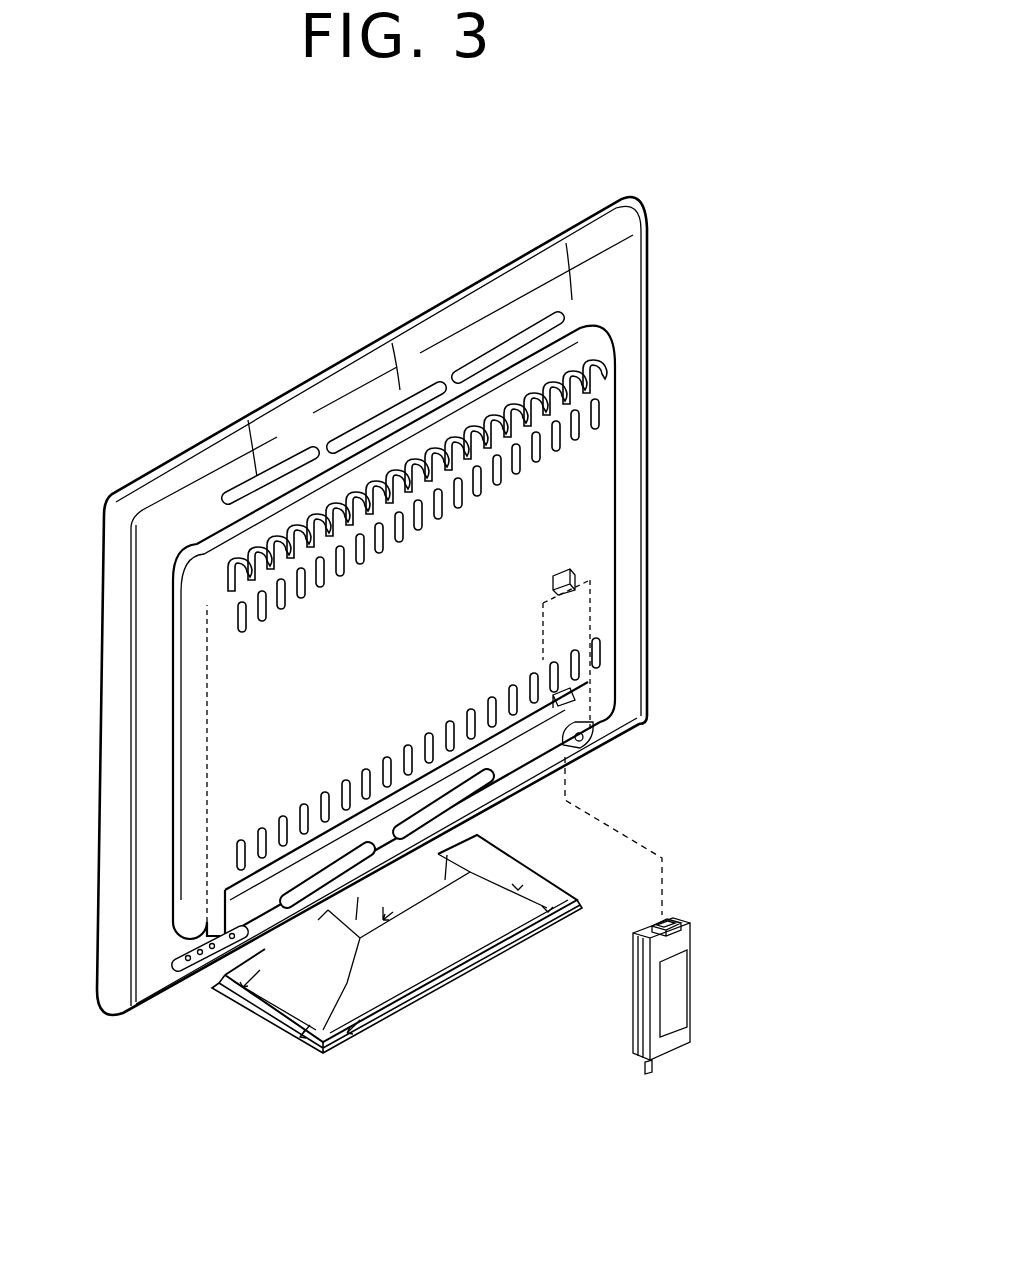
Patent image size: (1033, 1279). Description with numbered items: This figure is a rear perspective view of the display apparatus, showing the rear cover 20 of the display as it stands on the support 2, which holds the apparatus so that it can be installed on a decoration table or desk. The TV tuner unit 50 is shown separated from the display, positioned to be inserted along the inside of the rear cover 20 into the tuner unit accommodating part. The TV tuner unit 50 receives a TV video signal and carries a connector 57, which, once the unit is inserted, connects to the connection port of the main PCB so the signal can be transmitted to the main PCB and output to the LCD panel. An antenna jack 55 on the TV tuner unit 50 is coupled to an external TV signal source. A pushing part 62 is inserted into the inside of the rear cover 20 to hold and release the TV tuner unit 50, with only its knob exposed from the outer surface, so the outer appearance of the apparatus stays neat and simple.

The rear cover 20 is at (150, 985).
The support 2 is at (310, 1047).
The pushing part 62 is at (577, 573).
The TV tuner unit 50 is at (688, 1040).
The connector 57 is at (688, 922).
The antenna jack 55 is at (645, 1073).